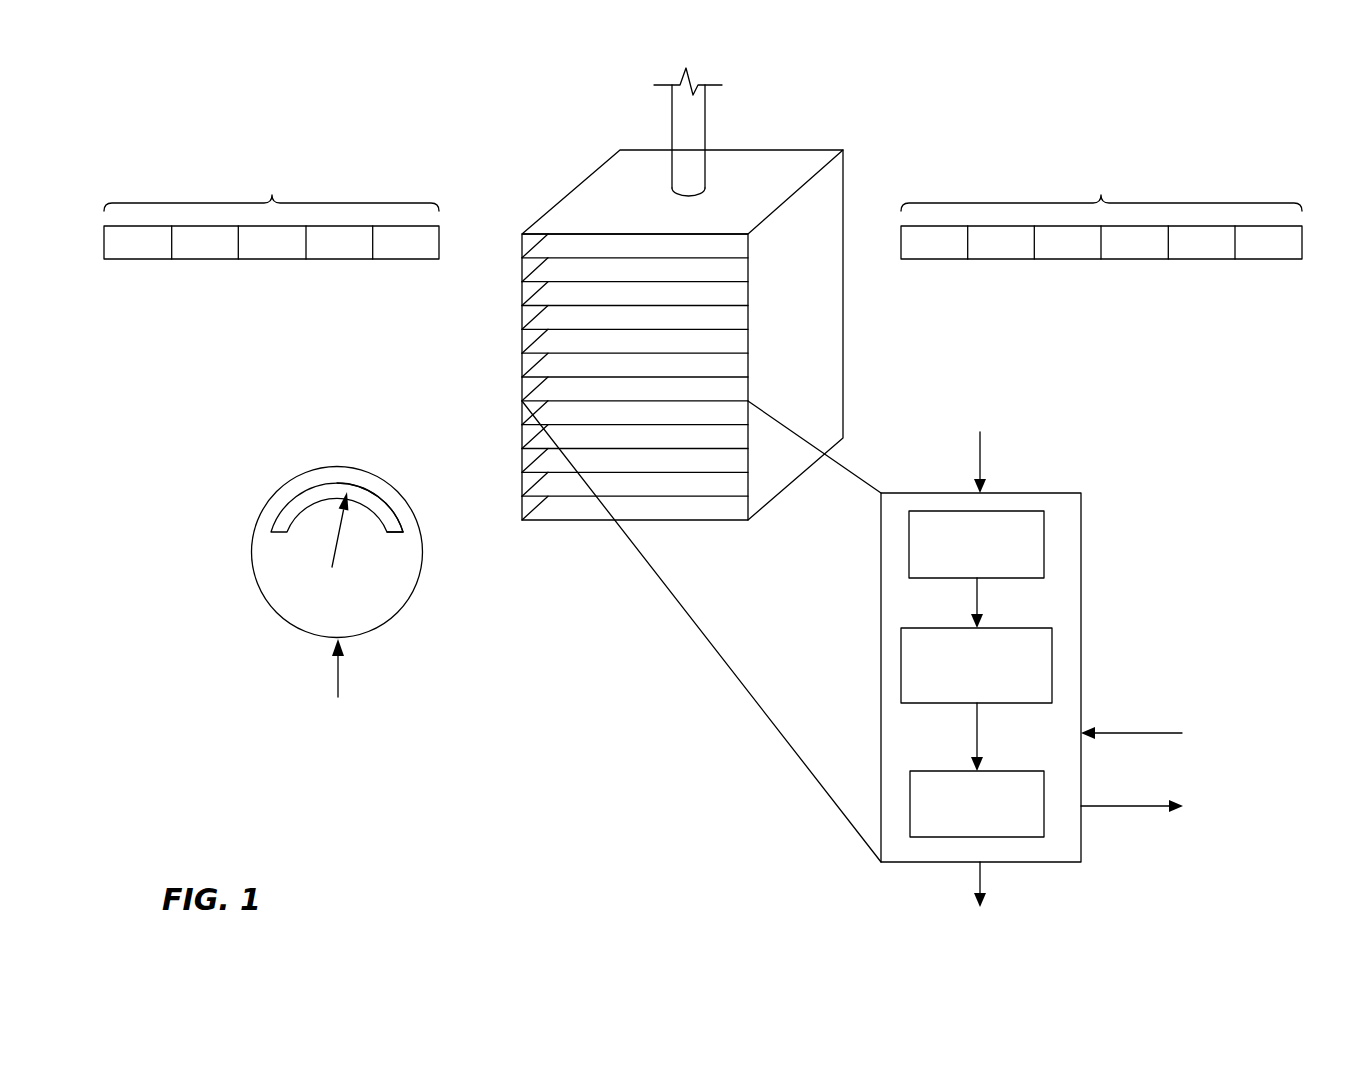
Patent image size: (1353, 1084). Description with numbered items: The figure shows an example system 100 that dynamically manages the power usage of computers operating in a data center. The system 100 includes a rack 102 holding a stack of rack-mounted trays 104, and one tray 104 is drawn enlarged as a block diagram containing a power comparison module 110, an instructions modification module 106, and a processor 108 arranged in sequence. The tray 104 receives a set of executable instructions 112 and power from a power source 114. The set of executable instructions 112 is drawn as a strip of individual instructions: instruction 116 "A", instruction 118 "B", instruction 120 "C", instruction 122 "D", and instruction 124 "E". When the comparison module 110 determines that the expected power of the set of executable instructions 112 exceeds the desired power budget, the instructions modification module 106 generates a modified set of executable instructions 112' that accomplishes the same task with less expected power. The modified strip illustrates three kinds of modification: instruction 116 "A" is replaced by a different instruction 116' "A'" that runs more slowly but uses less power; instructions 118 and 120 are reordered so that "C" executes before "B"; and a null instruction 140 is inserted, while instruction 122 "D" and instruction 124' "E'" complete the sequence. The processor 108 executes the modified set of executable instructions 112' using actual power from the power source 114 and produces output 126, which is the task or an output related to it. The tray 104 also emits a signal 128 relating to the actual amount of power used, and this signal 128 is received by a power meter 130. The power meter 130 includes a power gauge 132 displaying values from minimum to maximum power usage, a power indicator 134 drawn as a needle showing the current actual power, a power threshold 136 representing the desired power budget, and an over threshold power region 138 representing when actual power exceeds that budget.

The system 100 is at (427, 95).
The rack 102 is at (682, 335).
The rack-mounted tray 104 is at (786, 548).
The instructions modification module 106 is at (1031, 665).
The processor 108 is at (1003, 841).
The power comparison module 110 is at (1031, 544).
The set of executable instructions 112 is at (552, 331).
The modified set of executable instructions 112' is at (1101, 214).
The power source 114 is at (939, 406).
The instruction A 116 is at (117, 274).
The instruction A' 116' is at (912, 274).
The instruction B 118 is at (617, 274).
The instruction C 120 is at (618, 274).
The instruction D 122 is at (752, 274).
The instruction E 124 is at (387, 274).
The instruction E' 124' is at (1252, 274).
The output 126 is at (980, 898).
The signal 128 is at (773, 727).
The power meter 130 is at (337, 552).
The power gauge 132 is at (306, 507).
The power indicator 134 is at (309, 530).
The power threshold 136 is at (397, 507).
The over threshold power region 138 is at (428, 546).
The null instruction 140 is at (1112, 289).